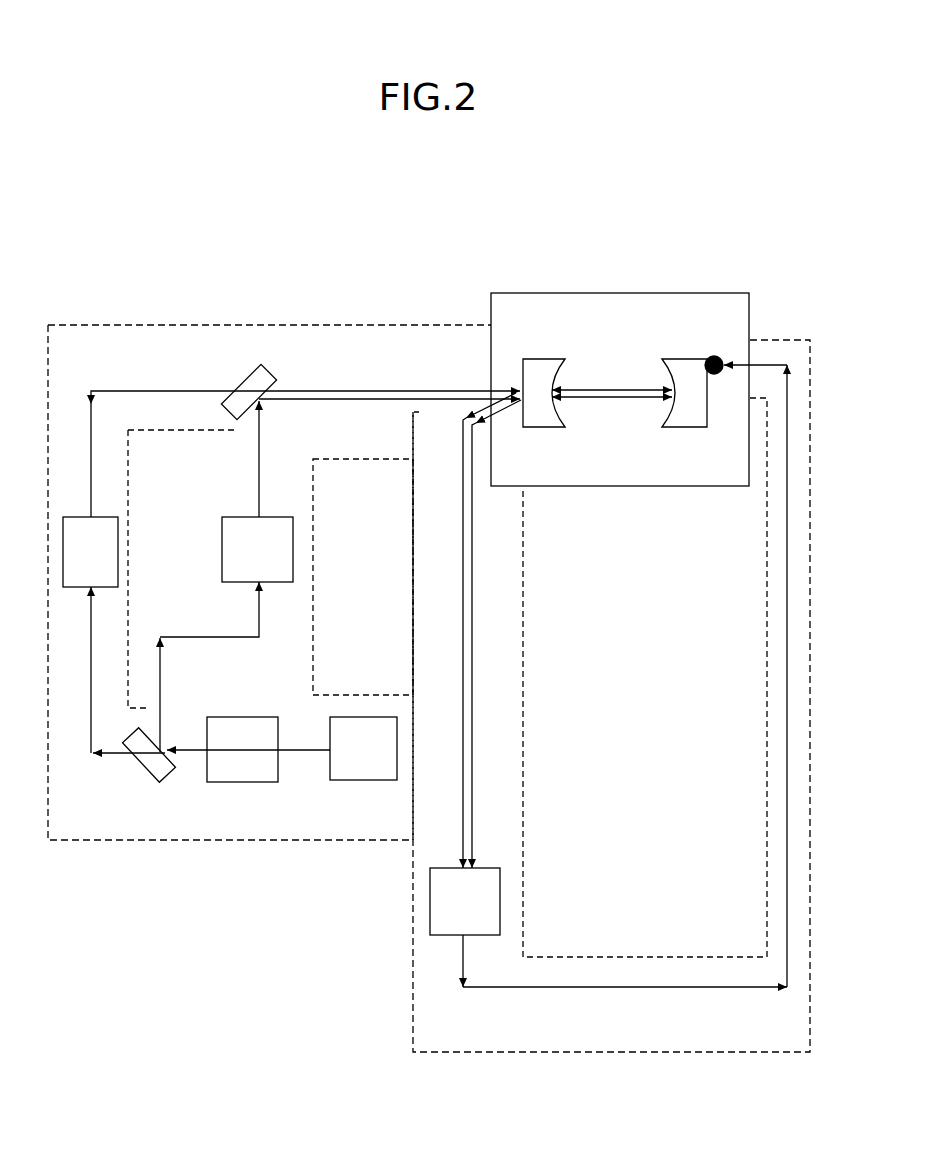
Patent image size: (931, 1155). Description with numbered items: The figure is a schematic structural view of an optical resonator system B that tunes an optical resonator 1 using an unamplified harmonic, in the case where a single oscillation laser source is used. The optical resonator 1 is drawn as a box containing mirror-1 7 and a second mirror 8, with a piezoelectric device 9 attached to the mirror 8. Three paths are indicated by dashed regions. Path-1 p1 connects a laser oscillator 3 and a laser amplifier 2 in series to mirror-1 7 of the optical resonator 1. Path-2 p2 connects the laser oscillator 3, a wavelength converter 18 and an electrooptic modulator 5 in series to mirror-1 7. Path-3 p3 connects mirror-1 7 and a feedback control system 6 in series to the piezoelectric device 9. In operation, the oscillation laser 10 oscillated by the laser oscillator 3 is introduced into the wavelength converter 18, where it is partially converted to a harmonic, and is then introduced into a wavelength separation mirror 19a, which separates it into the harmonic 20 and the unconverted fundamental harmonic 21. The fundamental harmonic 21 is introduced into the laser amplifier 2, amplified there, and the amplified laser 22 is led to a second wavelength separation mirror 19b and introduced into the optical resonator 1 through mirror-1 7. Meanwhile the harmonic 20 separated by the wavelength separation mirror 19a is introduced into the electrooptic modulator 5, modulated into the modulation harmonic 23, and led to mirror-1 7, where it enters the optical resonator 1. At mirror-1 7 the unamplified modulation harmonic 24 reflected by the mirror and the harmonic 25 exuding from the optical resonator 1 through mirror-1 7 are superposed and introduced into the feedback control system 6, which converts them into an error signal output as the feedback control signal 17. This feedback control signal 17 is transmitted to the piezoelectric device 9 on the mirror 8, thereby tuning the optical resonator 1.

The optical resonator system B is at (372, 242).
The path-1 p1 is at (153, 462).
The path-2 p2 is at (243, 822).
The path-3 p3 is at (553, 1030).
The optical resonator 1 is at (620, 389).
The laser amplifier 2 is at (257, 549).
The laser oscillator 3 is at (363, 748).
The electrooptic modulator 5 is at (90, 552).
The feedback control system 6 is at (465, 901).
The mirror-1 7 is at (544, 405).
The mirror 8 is at (684, 406).
The piezoelectric device 9 is at (716, 350).
The oscillation laser 10 is at (308, 754).
The feedback control signal 17 is at (627, 990).
The wavelength converter 18 is at (242, 749).
The wavelength separation mirror 19a is at (151, 769).
The wavelength separation mirror 19b is at (248, 378).
The harmonic 20 is at (114, 757).
The fundamental harmonic 21 is at (160, 680).
The amplified laser 22 is at (259, 456).
The modulation harmonic 23 is at (91, 482).
The unamplified modulation harmonic 24 is at (463, 563).
The harmonic 25 is at (472, 653).